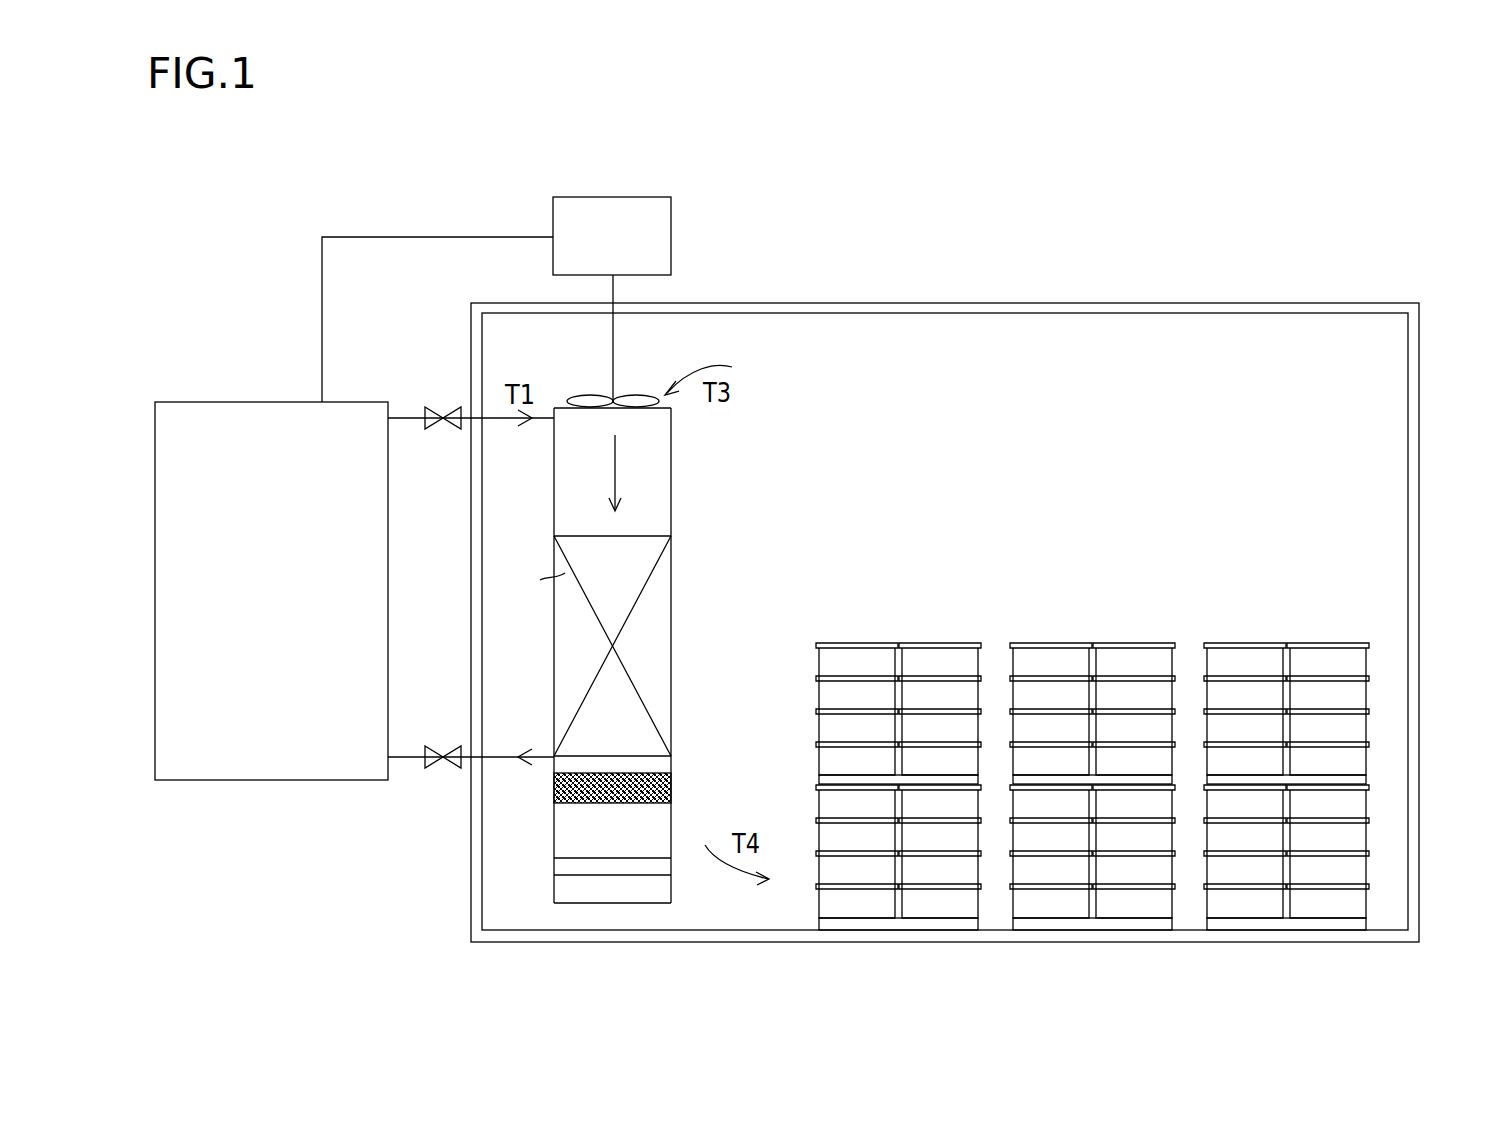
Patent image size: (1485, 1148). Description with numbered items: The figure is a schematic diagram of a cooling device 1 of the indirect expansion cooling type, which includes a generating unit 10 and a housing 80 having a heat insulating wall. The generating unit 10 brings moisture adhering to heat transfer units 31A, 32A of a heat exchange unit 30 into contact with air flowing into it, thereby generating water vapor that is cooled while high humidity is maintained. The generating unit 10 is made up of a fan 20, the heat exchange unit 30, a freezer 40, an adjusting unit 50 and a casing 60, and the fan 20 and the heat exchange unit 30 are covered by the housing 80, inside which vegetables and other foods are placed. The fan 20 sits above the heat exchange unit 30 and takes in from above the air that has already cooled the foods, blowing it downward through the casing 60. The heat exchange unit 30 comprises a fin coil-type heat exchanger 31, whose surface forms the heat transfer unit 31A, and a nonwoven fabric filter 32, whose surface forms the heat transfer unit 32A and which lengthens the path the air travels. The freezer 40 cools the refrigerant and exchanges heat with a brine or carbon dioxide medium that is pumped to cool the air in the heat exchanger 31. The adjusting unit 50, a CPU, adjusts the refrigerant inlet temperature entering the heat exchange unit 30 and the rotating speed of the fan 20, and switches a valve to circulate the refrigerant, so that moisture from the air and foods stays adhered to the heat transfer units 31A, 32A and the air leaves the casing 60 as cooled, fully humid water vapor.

The cooling device 1 is at (232, 215).
The generating unit 10 is at (411, 834).
The fan 20 is at (630, 395).
The heat exchange unit 30 is at (735, 625).
The heat exchanger 31 is at (672, 649).
The heat transfer unit 31A is at (577, 645).
The nonwoven fabric filter 32 is at (672, 790).
The heat transfer unit 32A is at (577, 788).
The freezer 40 is at (241, 762).
The adjusting unit 50 is at (623, 220).
The casing 60 is at (672, 480).
The housing 80 is at (1137, 303).